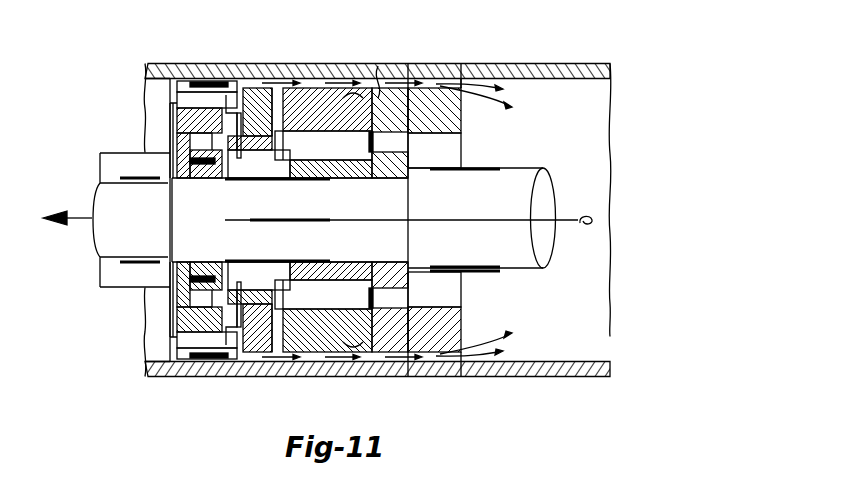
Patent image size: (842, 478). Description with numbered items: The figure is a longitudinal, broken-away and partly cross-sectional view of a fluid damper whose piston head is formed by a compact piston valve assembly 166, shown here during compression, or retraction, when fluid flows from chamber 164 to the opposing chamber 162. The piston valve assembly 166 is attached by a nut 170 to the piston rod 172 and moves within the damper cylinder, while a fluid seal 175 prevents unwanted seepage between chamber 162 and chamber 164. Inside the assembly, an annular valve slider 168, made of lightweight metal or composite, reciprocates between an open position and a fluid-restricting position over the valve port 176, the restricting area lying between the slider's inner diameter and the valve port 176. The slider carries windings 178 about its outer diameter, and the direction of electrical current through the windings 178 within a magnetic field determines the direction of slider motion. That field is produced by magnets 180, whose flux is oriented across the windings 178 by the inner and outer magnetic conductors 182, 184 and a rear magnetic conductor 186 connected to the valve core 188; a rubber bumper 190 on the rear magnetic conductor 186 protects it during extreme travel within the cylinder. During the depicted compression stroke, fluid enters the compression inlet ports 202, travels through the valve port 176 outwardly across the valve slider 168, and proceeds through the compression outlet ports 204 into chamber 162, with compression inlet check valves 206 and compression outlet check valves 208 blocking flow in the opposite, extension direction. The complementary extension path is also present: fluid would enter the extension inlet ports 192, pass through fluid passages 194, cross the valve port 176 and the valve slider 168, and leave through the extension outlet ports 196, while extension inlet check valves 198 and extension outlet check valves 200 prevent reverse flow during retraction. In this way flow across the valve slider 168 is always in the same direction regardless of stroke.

The chamber 162 is at (555, 131).
The chamber 164 is at (188, 99).
The piston valve assembly 166 is at (505, 311).
The valve slider 168 is at (258, 365).
The nut 170 is at (102, 273).
The piston rod 172 is at (482, 218).
The fluid seal 175 is at (228, 95).
The valve port 176 is at (193, 80).
The windings 178 is at (300, 95).
The magnets 180 is at (378, 66).
The inner magnetic conductor 182 is at (276, 95).
The outer magnetic conductor 184 is at (262, 178).
The rear magnetic conductor 186 is at (408, 66).
The valve core 188 is at (335, 178).
The rubber bumper 190 is at (461, 63).
The extension inlet ports 192 is at (398, 143).
The fluid passages 194 is at (318, 154).
The extension outlet ports 196 is at (145, 63).
The extension inlet check valves 198 is at (368, 134).
The extension outlet check valves 200 is at (157, 103).
The compression inlet ports 202 is at (187, 135).
The compression outlet ports 204 is at (327, 82).
The compression inlet check valves 206 is at (205, 180).
The compression outlet check valves 208 is at (248, 365).